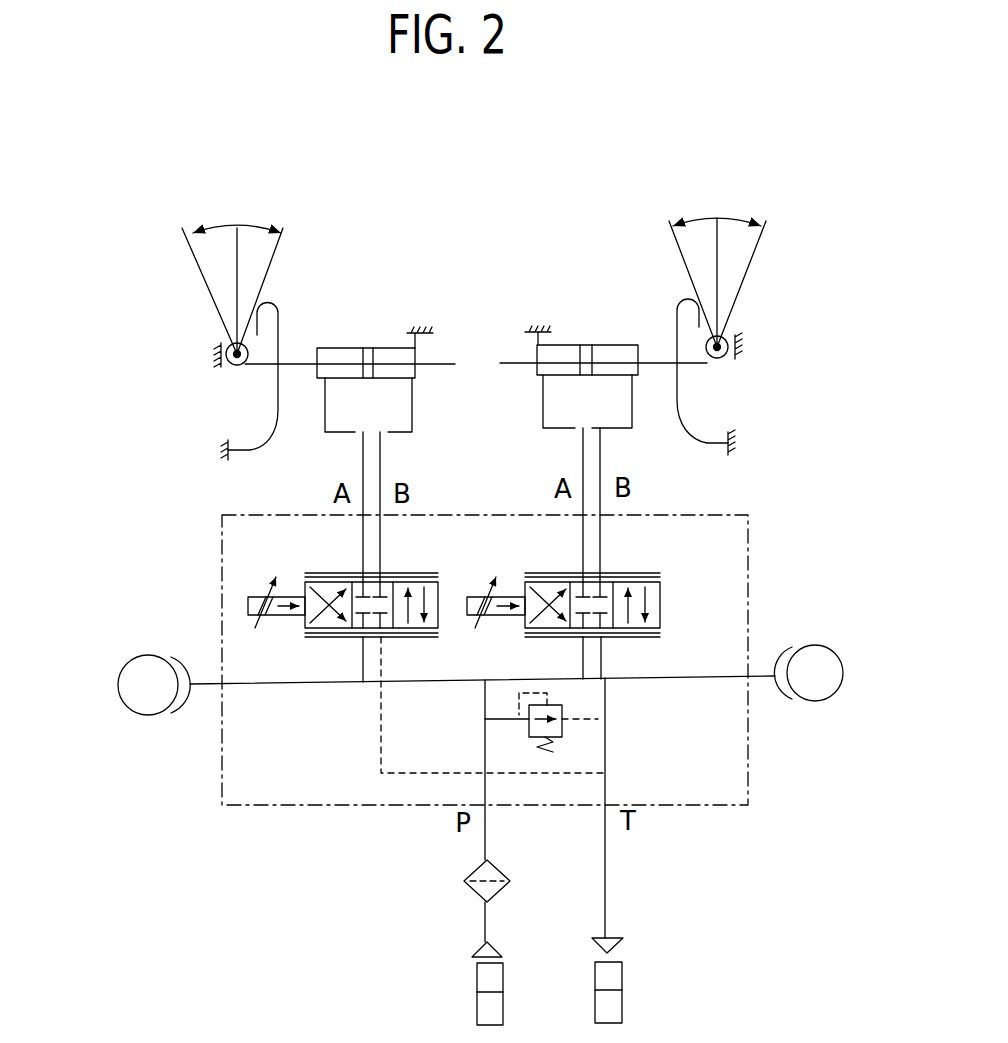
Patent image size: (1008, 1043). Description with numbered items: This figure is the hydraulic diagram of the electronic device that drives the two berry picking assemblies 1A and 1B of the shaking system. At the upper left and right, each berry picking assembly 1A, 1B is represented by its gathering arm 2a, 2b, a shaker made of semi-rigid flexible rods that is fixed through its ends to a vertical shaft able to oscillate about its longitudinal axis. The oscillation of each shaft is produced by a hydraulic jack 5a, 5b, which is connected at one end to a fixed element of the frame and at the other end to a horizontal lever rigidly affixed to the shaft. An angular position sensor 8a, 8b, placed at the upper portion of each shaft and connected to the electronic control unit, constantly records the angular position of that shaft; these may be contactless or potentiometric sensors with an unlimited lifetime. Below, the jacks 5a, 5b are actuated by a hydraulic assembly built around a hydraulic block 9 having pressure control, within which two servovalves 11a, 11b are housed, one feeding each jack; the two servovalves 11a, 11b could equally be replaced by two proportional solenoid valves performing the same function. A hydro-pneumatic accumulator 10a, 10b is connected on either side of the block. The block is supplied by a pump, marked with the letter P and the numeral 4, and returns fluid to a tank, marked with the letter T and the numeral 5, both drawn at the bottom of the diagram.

The berry picking assembly 1A is at (735, 203).
The berry picking assembly 1B is at (224, 213).
The gathering arm 2a is at (670, 307).
The gathering arm 2b is at (285, 310).
The pump 4 is at (487, 983).
The tank 5 is at (607, 980).
The hydraulic jack 5a is at (589, 357).
The hydraulic jack 5b is at (366, 357).
The angular position sensor 8a is at (724, 338).
The angular position sensor 8b is at (226, 345).
The hydraulic block 9 is at (713, 808).
The hydro-pneumatic accumulator 10a is at (835, 643).
The hydro-pneumatic accumulator 10b is at (130, 653).
The servovalve 11a is at (663, 575).
The servovalve 11b is at (290, 573).